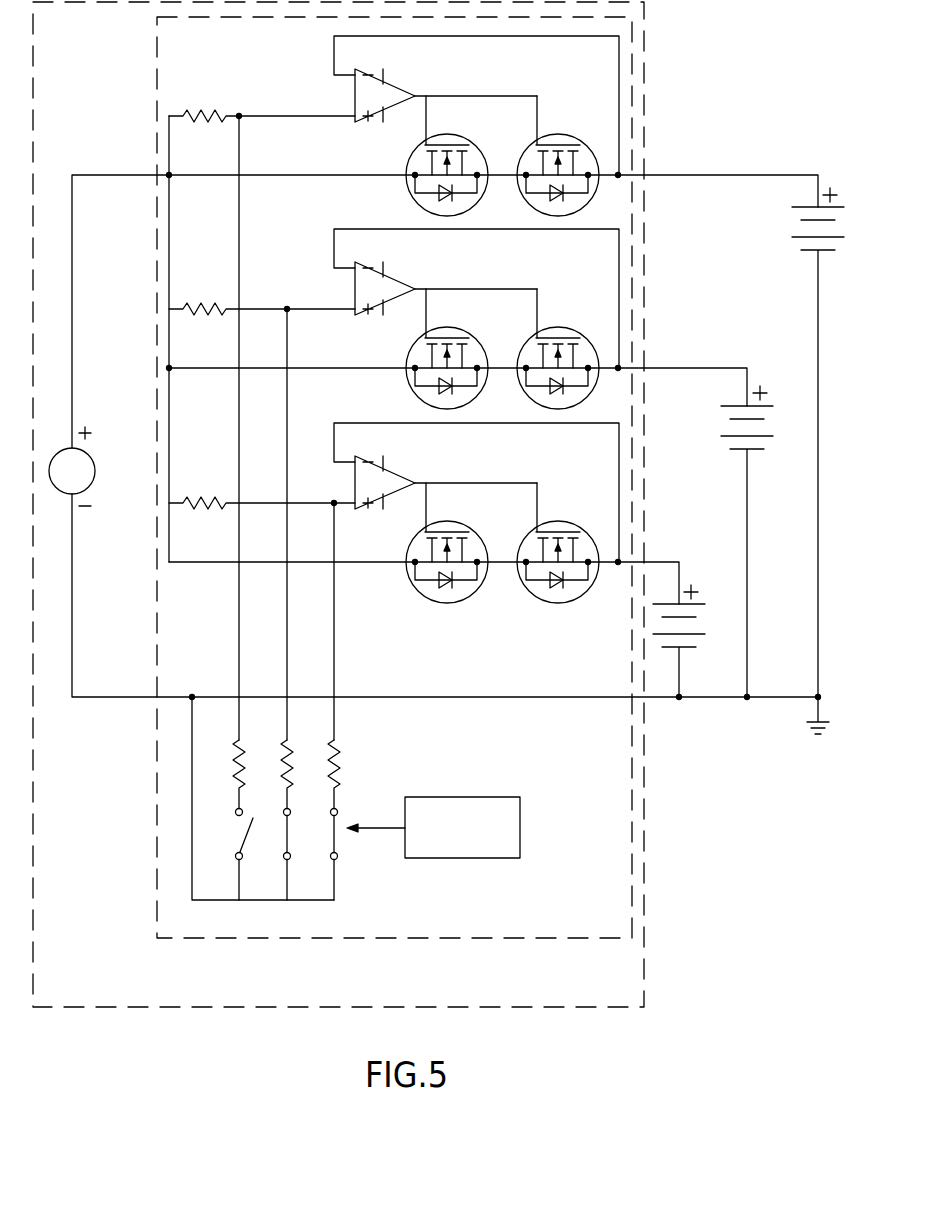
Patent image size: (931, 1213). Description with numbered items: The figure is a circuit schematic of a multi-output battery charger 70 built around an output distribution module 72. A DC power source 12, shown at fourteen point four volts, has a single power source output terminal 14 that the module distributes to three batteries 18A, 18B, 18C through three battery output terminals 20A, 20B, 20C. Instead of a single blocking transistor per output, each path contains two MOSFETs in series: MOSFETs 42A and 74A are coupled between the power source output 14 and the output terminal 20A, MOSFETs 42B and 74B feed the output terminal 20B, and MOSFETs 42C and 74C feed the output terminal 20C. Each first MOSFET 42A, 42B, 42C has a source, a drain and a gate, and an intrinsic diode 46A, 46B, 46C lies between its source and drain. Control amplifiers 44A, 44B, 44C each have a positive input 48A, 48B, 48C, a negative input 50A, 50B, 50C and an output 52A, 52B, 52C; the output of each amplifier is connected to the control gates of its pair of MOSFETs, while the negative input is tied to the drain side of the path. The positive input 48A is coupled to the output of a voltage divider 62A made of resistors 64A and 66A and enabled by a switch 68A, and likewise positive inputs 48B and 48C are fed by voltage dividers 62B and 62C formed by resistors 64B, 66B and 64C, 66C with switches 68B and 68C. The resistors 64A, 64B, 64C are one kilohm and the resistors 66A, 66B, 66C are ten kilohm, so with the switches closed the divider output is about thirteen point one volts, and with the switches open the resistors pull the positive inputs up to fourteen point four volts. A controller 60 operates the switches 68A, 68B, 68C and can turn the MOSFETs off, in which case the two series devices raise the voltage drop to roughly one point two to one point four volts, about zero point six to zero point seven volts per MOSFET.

The DC power source 12 is at (90, 452).
The power source output terminal 14 is at (124, 173).
The battery 18A is at (795, 210).
The battery 18B is at (740, 452).
The battery 18C is at (695, 604).
The output terminal 20A is at (767, 178).
The output terminal 20B is at (722, 372).
The output terminal 20C is at (682, 571).
The MOSFET 42A is at (440, 136).
The MOSFET 42B is at (440, 329).
The MOSFET 42C is at (440, 523).
The control amplifier 44A is at (385, 96).
The control amplifier 44B is at (385, 289).
The control amplifier 44C is at (385, 483).
The intrinsic diode 46A is at (420, 200).
The intrinsic diode 46B is at (420, 393).
The intrinsic diode 46C is at (420, 587).
The positive input 48A is at (345, 119).
The positive input 48B is at (345, 312).
The positive input 48C is at (344, 508).
The negative input 50A is at (347, 78).
The negative input 50B is at (347, 271).
The negative input 50C is at (345, 469).
The output 52A is at (430, 96).
The output 52B is at (430, 289).
The output 52C is at (430, 483).
The controller 60 is at (446, 797).
The voltage divider 62A is at (248, 98).
The voltage divider 62B is at (283, 296).
The voltage divider 62C is at (324, 514).
The resistor 64A is at (213, 111).
The resistor 64B is at (213, 304).
The resistor 64C is at (213, 498).
The resistor 66A is at (235, 750).
The resistor 66B is at (283, 750).
The resistor 66C is at (340, 750).
The switch 68A is at (242, 838).
The switch 68B is at (284, 838).
The switch 68C is at (336, 838).
The multi-output battery charger 70 is at (100, 1007).
The output distribution module 72 is at (232, 938).
The MOSFET 74A is at (555, 136).
The MOSFET 74B is at (555, 329).
The MOSFET 74C is at (555, 523).